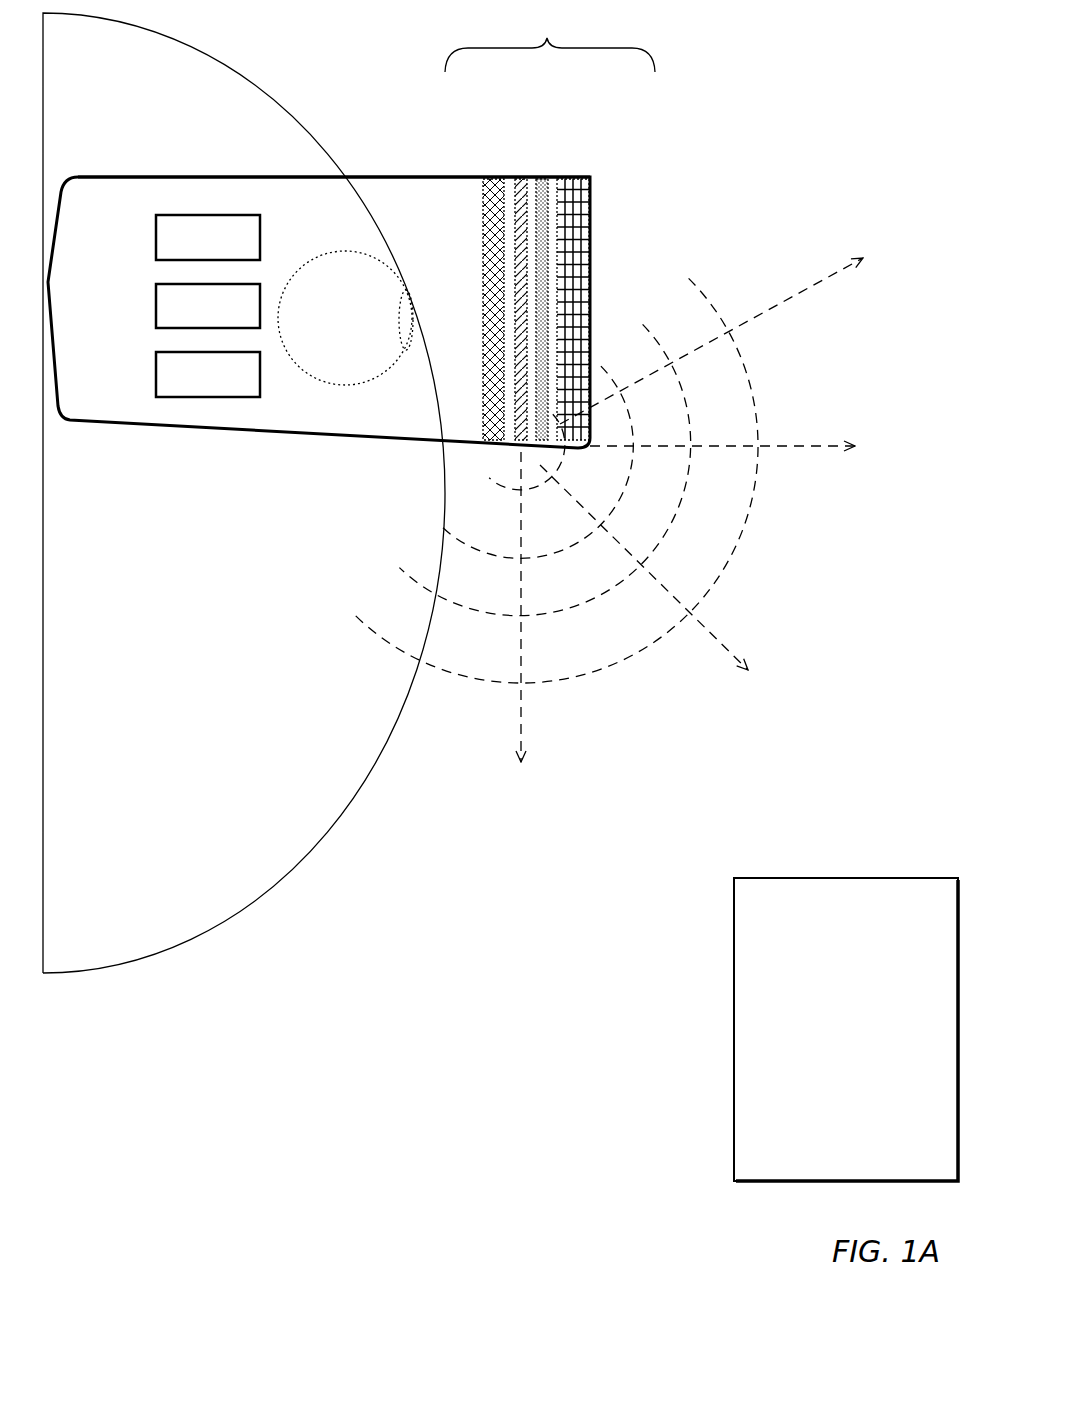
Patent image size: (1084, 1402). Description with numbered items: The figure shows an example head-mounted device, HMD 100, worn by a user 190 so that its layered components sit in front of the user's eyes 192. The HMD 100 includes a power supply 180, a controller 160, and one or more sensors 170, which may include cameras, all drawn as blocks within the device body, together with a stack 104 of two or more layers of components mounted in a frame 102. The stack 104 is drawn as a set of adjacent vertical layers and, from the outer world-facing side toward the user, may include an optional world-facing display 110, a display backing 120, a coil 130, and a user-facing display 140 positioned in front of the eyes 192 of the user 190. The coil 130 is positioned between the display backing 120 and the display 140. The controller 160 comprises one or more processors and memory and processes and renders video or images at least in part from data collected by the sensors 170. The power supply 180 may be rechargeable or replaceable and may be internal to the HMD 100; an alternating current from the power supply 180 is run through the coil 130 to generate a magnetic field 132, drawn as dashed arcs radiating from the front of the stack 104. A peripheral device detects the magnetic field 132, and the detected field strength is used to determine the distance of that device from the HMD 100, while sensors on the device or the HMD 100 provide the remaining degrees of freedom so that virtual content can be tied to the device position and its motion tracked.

The head-mounted device 100 is at (319, 312).
The frame 102 is at (393, 172).
The stack 104 is at (550, 222).
The world-facing display 110 is at (574, 173).
The display backing 120 is at (542, 173).
The coil 130 is at (520, 173).
The magnetic field 132 is at (608, 500).
The user-facing display 140 is at (493, 173).
The controller 160 is at (208, 306).
The sensors 170 is at (208, 374).
The power supply 180 is at (557, 698).
The user 190 is at (244, 493).
The eyes 192 is at (345, 318).